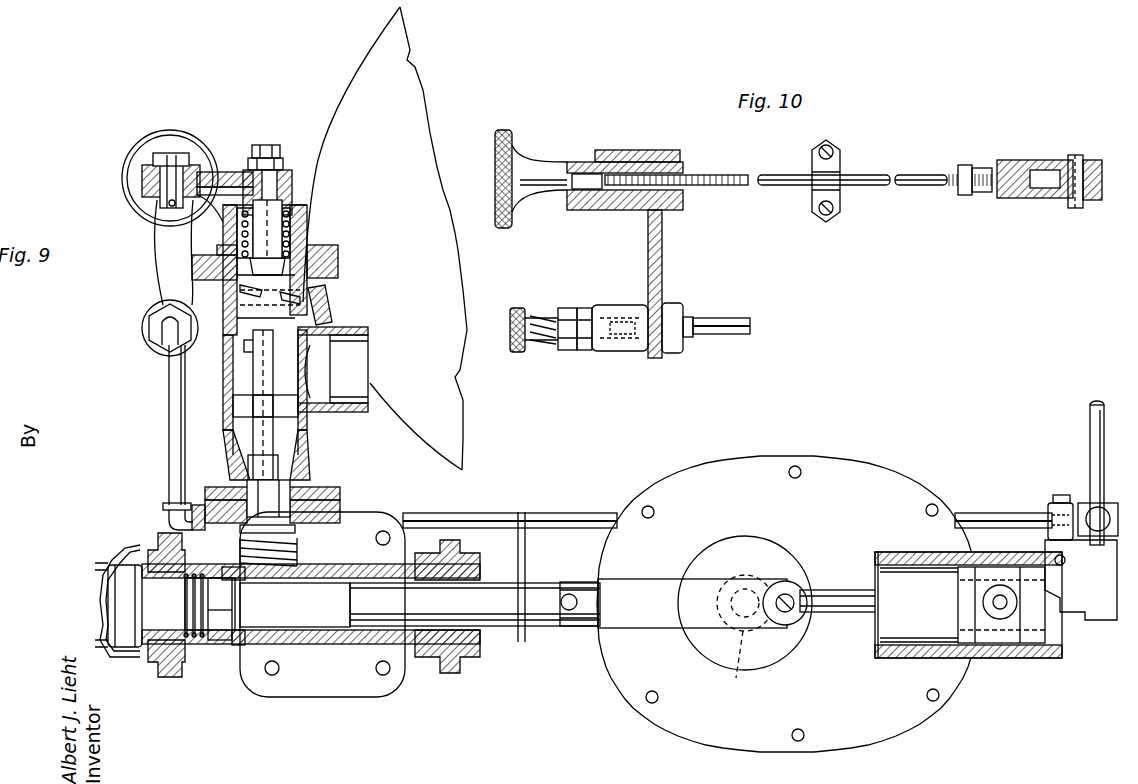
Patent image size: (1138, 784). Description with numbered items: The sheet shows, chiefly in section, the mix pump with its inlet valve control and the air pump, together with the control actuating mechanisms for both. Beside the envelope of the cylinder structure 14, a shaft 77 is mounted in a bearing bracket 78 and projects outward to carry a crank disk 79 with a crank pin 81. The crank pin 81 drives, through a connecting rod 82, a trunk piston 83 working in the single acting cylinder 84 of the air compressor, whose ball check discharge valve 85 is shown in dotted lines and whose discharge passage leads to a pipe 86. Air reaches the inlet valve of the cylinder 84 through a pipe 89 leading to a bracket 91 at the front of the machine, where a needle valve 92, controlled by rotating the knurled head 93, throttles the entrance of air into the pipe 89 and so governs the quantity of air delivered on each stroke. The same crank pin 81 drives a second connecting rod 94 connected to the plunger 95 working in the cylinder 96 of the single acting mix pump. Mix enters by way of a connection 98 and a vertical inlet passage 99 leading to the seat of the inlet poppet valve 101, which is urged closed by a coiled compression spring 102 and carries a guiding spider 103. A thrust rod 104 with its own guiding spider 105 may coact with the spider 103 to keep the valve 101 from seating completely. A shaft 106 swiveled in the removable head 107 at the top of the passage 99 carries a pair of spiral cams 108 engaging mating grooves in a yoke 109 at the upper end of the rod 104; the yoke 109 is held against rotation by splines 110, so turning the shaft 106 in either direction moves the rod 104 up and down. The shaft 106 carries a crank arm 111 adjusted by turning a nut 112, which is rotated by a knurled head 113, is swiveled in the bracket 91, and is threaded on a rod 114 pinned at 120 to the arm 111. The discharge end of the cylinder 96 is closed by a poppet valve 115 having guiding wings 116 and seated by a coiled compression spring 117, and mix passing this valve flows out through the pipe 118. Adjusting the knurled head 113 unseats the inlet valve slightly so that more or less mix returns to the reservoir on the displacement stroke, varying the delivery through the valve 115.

In FIG. 9, the cylinder structure 14 is at (338, 94).
In FIG. 9, the shaft 77 is at (745, 637).
In FIG. 9, the bearing bracket 78 is at (860, 458).
In FIG. 9, the crank disk 79 is at (792, 560).
In FIG. 9, the crank pin 81 is at (805, 626).
In FIG. 9, the connecting rod 82 is at (842, 590).
In FIG. 9, the trunk piston 83 is at (1022, 642).
In FIG. 9, the single acting cylinder 84 is at (888, 660).
In FIG. 9, the discharge valve 85 is at (1072, 606).
In FIG. 9, the pipe 86 is at (1090, 432).
In FIG. 9, the pipe 89 is at (169, 446).
In FIG. 10, the pipe 89 is at (730, 322).
In FIG. 9, the bracket 91 is at (160, 279).
In FIG. 10, the bracket 91 is at (662, 258).
In FIG. 10, the needle valve 92 is at (610, 305).
In FIG. 10, the knurled head 93 is at (516, 308).
In FIG. 9, the second connecting rod 94 is at (637, 622).
In FIG. 9, the plunger 95 is at (512, 645).
In FIG. 9, the cylinder 96 is at (312, 640).
In FIG. 9, the connection 98 is at (318, 366).
In FIG. 9, the vertical inlet passage 99 is at (242, 398).
In FIG. 9, the inlet poppet valve 101 is at (326, 493).
In FIG. 9, the coiled compression spring 102 is at (300, 553).
In FIG. 9, the guiding spider 103 is at (310, 472).
In FIG. 9, the thrust rod 104 is at (246, 360).
In FIG. 9, the guiding spider 105 is at (258, 420).
In FIG. 9, the shaft 106 is at (292, 236).
In FIG. 9, the removable head 107 is at (308, 212).
In FIG. 9, the spiral cams 108 is at (150, 313).
In FIG. 9, the yoke 109 is at (332, 333).
In FIG. 9, the splines 110 is at (262, 328).
In FIG. 9, the crank arm 111 is at (240, 172).
In FIG. 10, the crank arm 111 is at (1046, 198).
In FIG. 10, the nut 112 is at (668, 172).
In FIG. 9, the knurled head 113 is at (152, 142).
In FIG. 10, the knurled head 113 is at (506, 138).
In FIG. 10, the rod 114 is at (860, 178).
In FIG. 9, the poppet valve 115 is at (258, 660).
In FIG. 9, the guiding wings 116 is at (190, 665).
In FIG. 9, the coiled compression spring 117 is at (205, 575).
In FIG. 9, the pipe 118 is at (117, 558).
In FIG. 9, the pin 120 is at (142, 180).
In FIG. 10, the pin 120 is at (1074, 156).